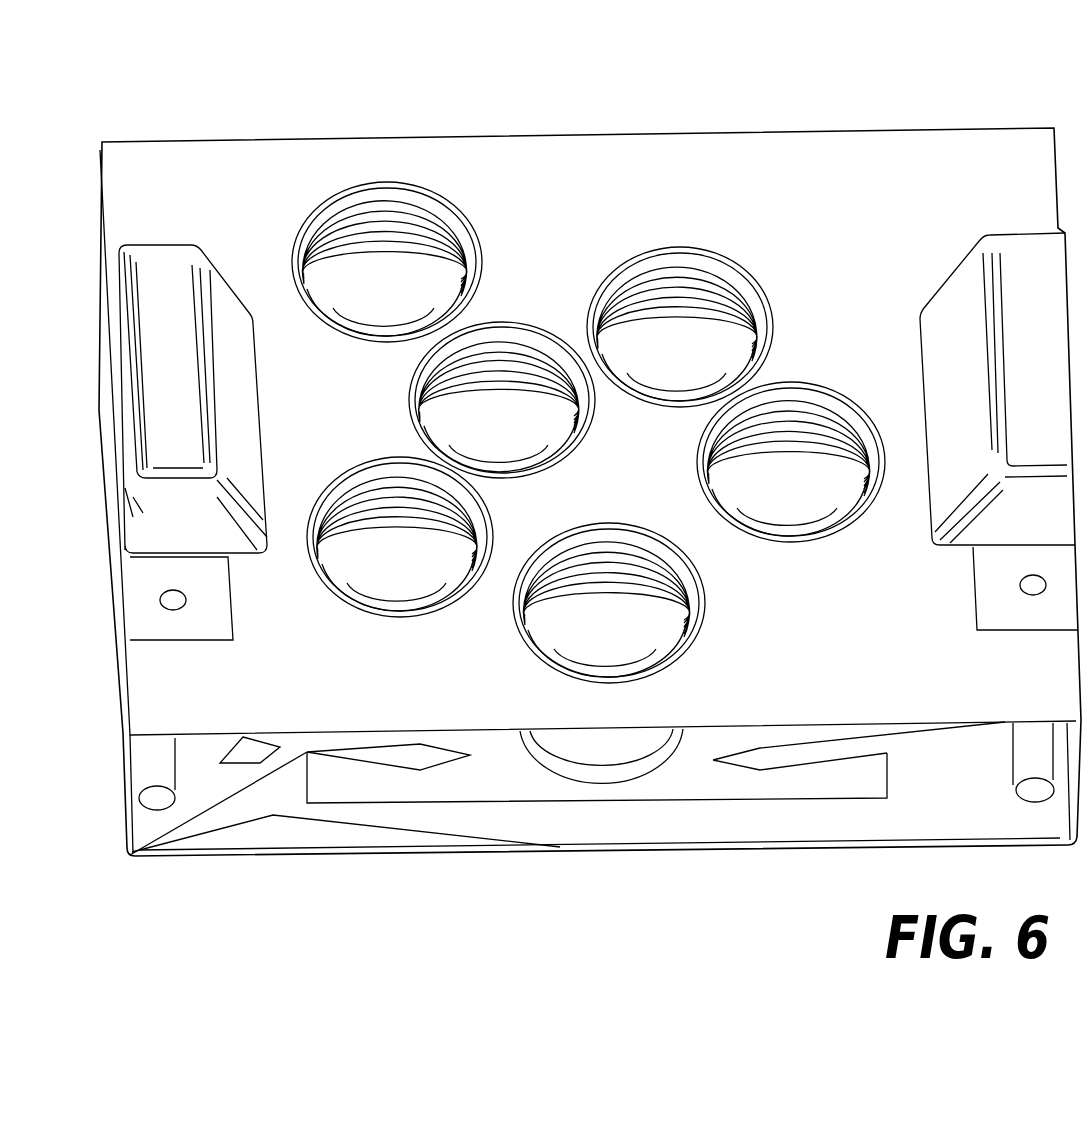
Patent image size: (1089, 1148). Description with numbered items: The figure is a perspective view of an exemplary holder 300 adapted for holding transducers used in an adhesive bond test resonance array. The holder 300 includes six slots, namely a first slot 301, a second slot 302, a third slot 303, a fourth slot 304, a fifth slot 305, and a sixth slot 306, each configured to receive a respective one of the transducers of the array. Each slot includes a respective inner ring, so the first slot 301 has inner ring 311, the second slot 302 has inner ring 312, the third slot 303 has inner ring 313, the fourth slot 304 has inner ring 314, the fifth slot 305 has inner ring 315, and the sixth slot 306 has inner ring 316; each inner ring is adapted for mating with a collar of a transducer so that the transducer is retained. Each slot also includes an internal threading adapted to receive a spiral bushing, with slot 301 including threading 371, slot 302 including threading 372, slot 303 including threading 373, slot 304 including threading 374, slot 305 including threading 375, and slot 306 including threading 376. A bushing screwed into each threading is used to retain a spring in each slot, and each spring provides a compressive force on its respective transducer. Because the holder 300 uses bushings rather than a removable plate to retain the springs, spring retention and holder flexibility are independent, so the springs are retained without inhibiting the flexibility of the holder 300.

The holder 300 is at (177, 107).
The first slot 301 is at (378, 201).
The second slot 302 is at (465, 333).
The third slot 303 is at (686, 281).
The fourth slot 304 is at (810, 404).
The fifth slot 305 is at (654, 693).
The sixth slot 306 is at (419, 671).
The inner ring 311 is at (352, 316).
The inner ring 312 is at (468, 450).
The inner ring 313 is at (684, 372).
The inner ring 314 is at (801, 512).
The inner ring 315 is at (618, 647).
The inner ring 316 is at (392, 576).
The threading 371 is at (440, 228).
The threading 372 is at (563, 375).
The threading 373 is at (644, 277).
The threading 374 is at (876, 485).
The threading 375 is at (689, 612).
The threading 376 is at (466, 512).